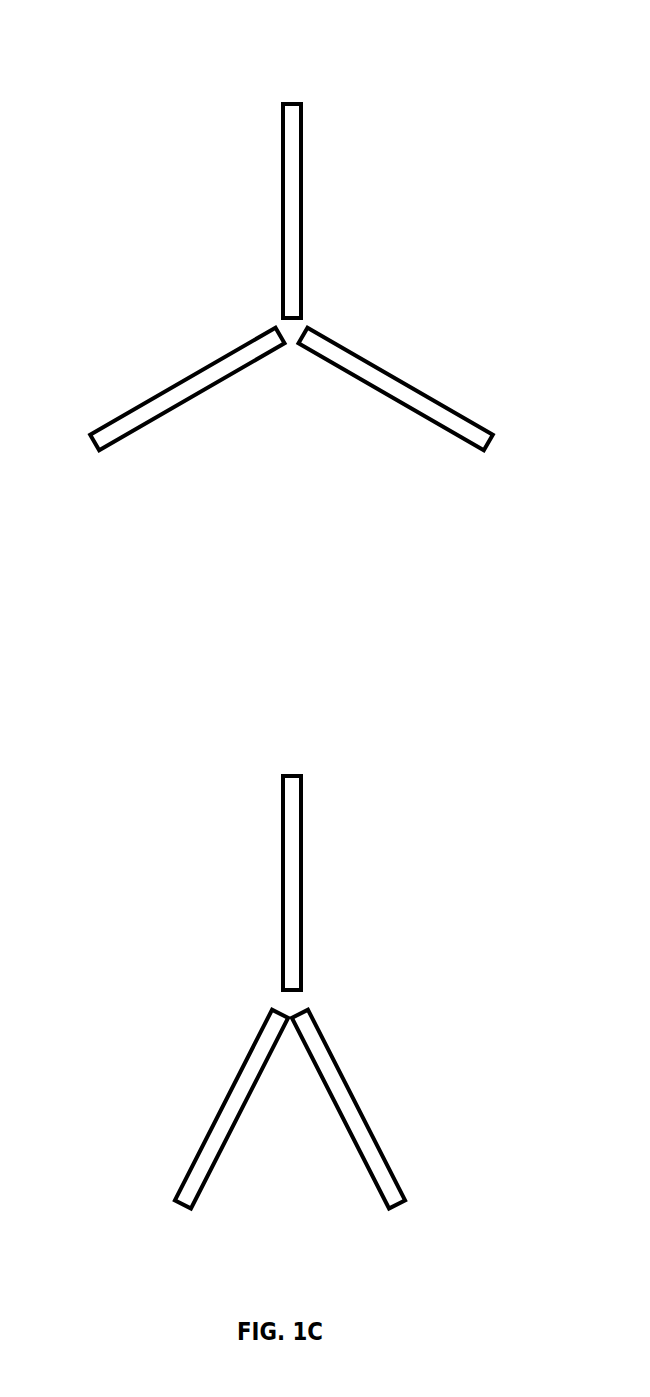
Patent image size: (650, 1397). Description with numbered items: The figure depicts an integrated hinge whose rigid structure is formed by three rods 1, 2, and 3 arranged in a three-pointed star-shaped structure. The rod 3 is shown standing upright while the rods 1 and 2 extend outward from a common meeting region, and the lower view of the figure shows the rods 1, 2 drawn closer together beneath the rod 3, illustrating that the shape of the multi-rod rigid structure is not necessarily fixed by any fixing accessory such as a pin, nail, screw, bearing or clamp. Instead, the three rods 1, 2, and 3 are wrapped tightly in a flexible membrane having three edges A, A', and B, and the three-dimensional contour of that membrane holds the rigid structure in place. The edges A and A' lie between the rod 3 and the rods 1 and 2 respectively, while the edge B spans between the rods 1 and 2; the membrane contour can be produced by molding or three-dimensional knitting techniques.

The rod 1 is at (176, 800).
The rod 2 is at (408, 800).
The rod 3 is at (292, 507).
The edge A is at (204, 628).
The edge A' is at (384, 625).
The edge B is at (291, 797).